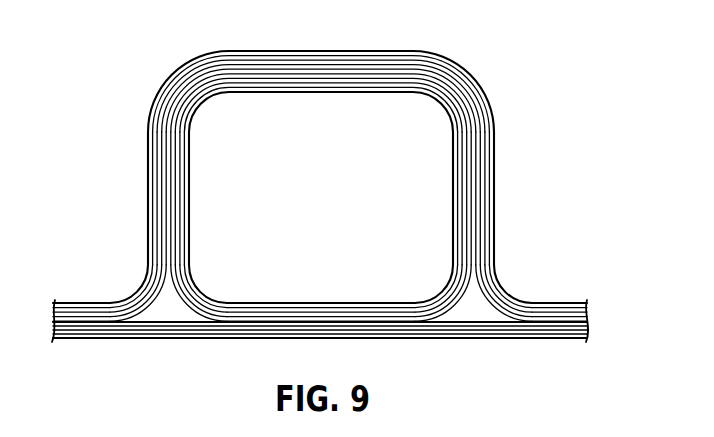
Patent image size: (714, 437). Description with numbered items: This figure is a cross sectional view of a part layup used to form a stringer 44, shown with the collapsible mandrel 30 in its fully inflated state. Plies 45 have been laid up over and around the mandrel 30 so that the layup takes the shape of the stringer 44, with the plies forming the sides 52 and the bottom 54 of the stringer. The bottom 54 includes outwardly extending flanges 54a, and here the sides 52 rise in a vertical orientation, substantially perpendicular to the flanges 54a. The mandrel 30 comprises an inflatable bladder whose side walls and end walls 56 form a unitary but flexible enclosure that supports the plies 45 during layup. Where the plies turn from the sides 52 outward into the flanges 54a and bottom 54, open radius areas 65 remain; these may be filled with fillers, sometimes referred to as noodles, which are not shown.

The stringer 44 is at (157, 62).
The mandrel 30 is at (425, 177).
The plies 45 is at (167, 171).
The sides 52 is at (491, 192).
The end walls 56 is at (332, 205).
The open radius areas 65 is at (163, 312).
The bottom 54 is at (256, 327).
The flanges 54a is at (92, 330).